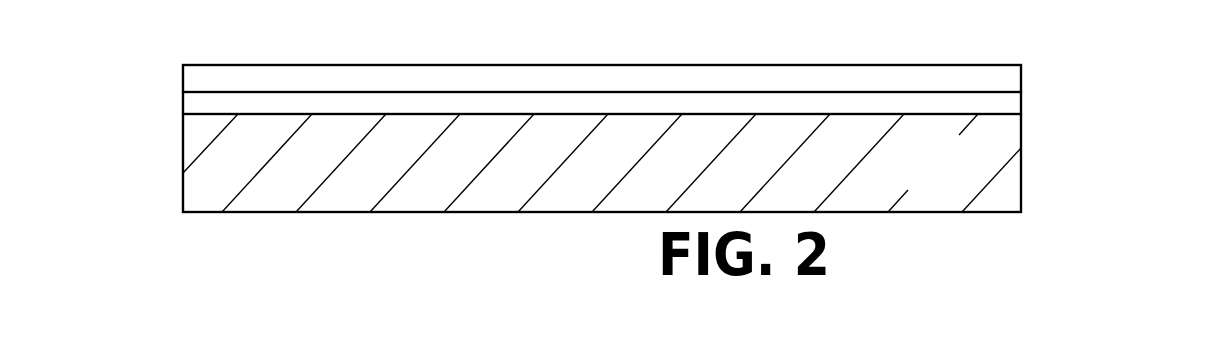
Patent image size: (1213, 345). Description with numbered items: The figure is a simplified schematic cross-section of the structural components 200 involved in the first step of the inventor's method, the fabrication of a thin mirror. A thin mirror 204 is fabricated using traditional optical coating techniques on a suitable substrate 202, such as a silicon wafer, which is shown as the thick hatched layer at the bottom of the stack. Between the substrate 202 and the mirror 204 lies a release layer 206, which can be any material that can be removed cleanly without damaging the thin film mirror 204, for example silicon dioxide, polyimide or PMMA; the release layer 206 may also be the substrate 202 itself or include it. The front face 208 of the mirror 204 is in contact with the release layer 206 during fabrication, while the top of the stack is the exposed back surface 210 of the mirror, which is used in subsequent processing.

The structural components 200 is at (390, 32).
The substrate 202 is at (973, 182).
The thin mirror 204 is at (1027, 72).
The release layer 206 is at (1022, 108).
The front face of mirror 208 is at (1021, 93).
The exposed back surface of mirror 210 is at (859, 65).